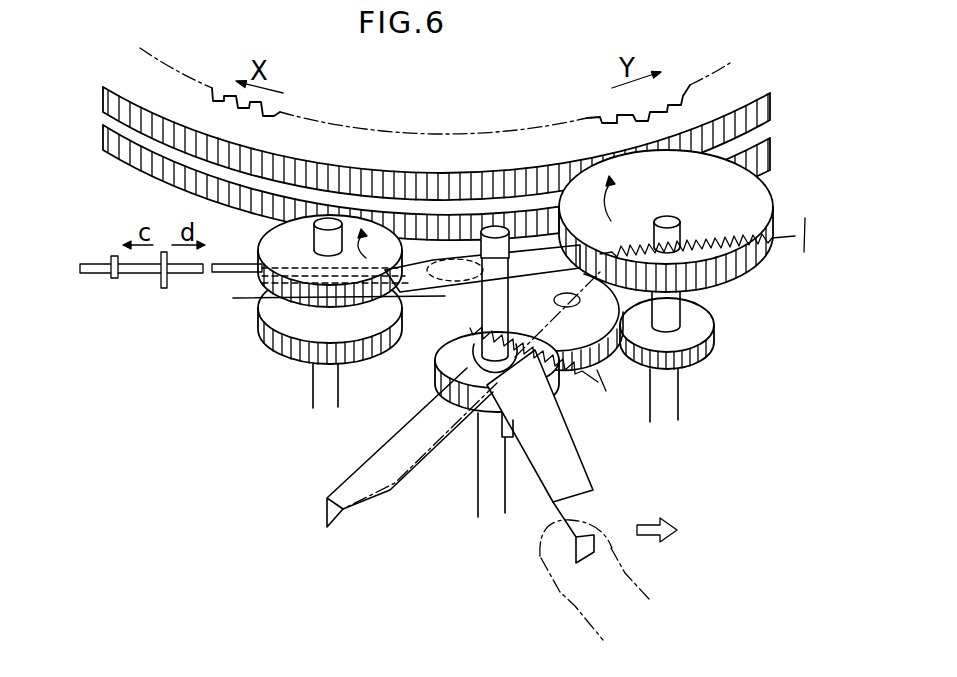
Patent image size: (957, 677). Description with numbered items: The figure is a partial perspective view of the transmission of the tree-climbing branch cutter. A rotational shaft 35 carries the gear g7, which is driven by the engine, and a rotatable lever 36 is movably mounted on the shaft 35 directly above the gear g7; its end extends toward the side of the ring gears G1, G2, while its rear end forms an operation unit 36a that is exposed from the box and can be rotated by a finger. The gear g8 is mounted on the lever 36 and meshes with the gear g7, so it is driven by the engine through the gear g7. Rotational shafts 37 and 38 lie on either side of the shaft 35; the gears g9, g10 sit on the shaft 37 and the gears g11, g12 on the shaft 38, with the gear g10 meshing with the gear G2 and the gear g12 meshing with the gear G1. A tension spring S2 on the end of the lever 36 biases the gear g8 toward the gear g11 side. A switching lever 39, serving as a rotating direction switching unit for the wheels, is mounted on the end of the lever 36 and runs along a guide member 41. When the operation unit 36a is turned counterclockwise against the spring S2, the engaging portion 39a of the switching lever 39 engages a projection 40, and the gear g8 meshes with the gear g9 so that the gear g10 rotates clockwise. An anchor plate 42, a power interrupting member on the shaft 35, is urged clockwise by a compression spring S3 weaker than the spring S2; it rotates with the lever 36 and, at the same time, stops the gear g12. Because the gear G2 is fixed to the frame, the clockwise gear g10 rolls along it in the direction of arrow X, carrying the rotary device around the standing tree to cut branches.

The gear G1 is at (263, 108).
The gear G2 is at (165, 152).
The gear g7 is at (442, 363).
The gear g8 is at (532, 285).
The gear g9 is at (303, 327).
The gear g10 is at (352, 222).
The gear g11 is at (712, 318).
The gear g12 is at (612, 165).
The rotational shaft 35 is at (483, 477).
The rotatable lever 36 is at (574, 463).
The operation unit 36a is at (547, 517).
The rotational shaft 37 is at (313, 400).
The rotational shaft 38 is at (680, 383).
The switching lever 39 is at (227, 274).
The engaging portion 39a is at (98, 274).
The projection 40 is at (115, 279).
The guide member 41 is at (165, 289).
The anchor plate 42 is at (555, 262).
The tension spring S2 is at (740, 242).
The compression spring S3 is at (573, 378).